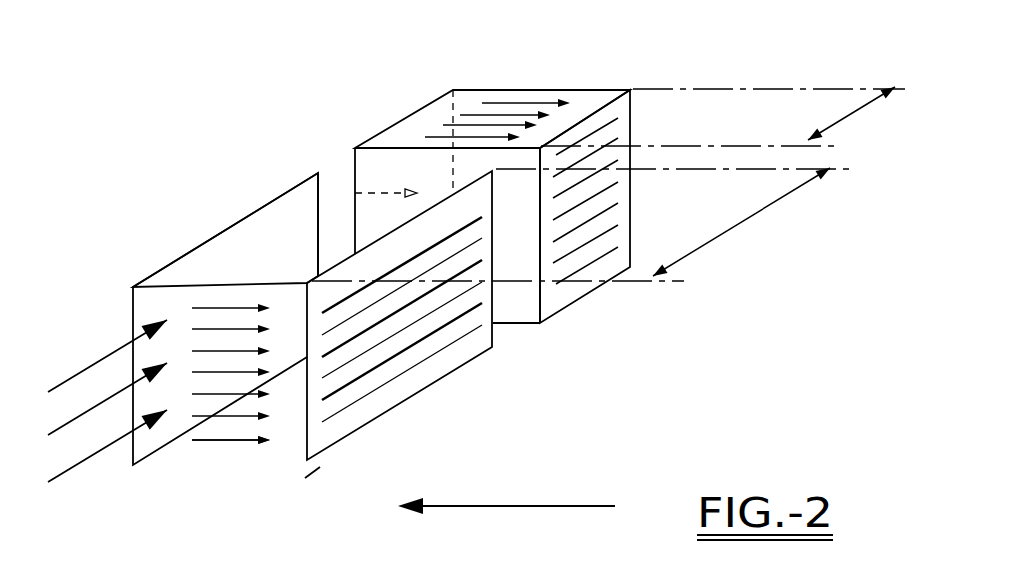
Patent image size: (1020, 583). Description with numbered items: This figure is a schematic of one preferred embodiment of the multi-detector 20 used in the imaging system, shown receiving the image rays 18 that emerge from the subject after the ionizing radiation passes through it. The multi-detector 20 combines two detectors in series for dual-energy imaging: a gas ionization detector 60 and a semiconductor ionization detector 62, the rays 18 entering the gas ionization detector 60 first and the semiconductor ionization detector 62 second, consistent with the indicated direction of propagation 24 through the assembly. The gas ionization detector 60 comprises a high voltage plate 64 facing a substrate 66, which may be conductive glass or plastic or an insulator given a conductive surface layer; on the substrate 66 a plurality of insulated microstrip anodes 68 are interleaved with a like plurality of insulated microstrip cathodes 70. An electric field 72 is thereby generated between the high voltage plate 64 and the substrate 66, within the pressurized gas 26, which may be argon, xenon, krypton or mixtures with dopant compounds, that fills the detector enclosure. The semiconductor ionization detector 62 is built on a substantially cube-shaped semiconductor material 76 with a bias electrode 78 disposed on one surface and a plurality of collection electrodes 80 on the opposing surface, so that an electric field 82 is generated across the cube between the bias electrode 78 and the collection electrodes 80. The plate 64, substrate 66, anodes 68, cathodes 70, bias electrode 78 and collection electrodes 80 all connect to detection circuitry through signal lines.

The rays 18 is at (78, 467).
The multi-detector 20 is at (476, 271).
The direction of light propagation arrow 24 is at (522, 506).
The pressurized gas 26 is at (276, 448).
The gas ionization detector 60 is at (733, 228).
The semiconductor ionization detector 62 is at (847, 118).
The high voltage plate 64 is at (210, 228).
The substrate 66 is at (443, 330).
The insulated microstrip anodes 68 is at (403, 380).
The insulated microstrip cathodes 70 is at (488, 311).
The electric field 72 is at (232, 450).
The semiconductor material 76 is at (529, 182).
The bias electrode 78 is at (355, 193).
The collection electrodes 80 is at (571, 291).
The electric field 82 is at (526, 100).